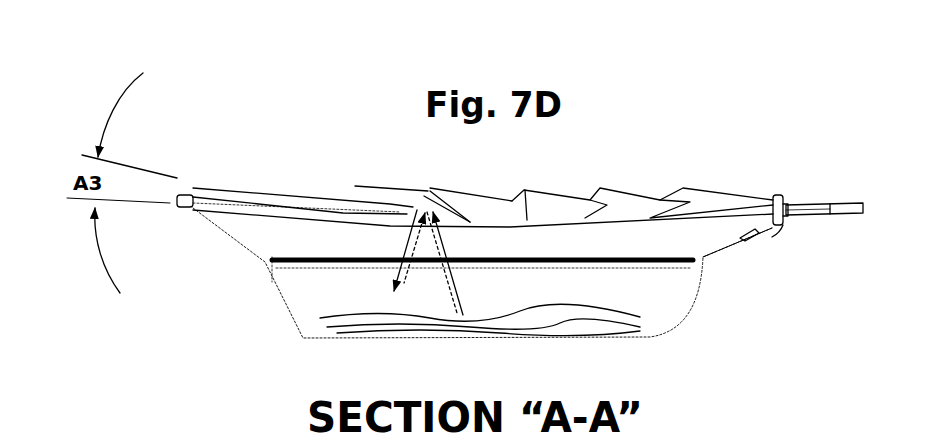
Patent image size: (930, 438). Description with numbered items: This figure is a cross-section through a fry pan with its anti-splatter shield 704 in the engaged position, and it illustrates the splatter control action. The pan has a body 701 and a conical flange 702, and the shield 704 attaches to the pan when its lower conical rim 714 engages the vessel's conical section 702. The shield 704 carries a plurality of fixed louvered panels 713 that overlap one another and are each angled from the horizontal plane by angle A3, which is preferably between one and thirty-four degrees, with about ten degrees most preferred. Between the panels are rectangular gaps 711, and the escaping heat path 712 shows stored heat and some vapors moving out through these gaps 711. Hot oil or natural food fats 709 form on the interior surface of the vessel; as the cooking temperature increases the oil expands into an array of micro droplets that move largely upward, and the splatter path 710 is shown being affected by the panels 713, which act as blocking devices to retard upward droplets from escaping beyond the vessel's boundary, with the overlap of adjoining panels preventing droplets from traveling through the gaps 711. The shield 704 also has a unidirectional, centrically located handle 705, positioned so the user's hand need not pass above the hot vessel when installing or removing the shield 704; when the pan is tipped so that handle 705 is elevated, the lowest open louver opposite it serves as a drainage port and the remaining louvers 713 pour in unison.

The body 701 is at (298, 340).
The conical flange 702 is at (739, 248).
The anti-splatter shield 704 is at (798, 196).
The handle 705 is at (866, 197).
The hot oil or natural food fats 709 is at (338, 314).
The splatter path 710 is at (453, 262).
The rectangular gaps 711 is at (428, 190).
The escaping heat path 712 is at (347, 242).
The fixed louvered panels 713 is at (551, 184).
The lower conical rim 714 is at (779, 233).